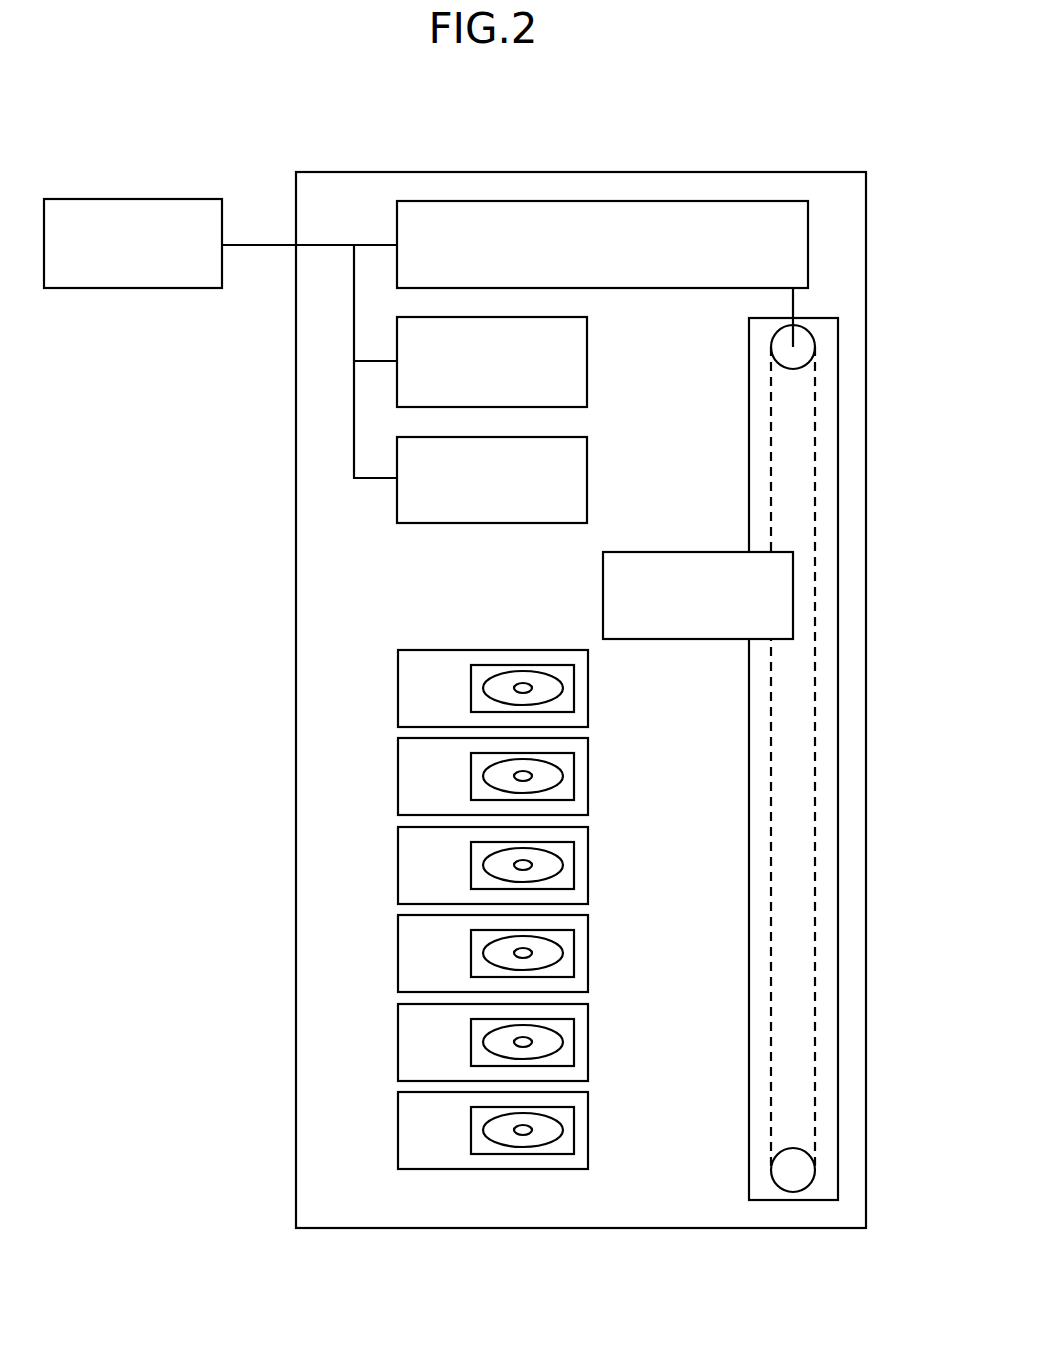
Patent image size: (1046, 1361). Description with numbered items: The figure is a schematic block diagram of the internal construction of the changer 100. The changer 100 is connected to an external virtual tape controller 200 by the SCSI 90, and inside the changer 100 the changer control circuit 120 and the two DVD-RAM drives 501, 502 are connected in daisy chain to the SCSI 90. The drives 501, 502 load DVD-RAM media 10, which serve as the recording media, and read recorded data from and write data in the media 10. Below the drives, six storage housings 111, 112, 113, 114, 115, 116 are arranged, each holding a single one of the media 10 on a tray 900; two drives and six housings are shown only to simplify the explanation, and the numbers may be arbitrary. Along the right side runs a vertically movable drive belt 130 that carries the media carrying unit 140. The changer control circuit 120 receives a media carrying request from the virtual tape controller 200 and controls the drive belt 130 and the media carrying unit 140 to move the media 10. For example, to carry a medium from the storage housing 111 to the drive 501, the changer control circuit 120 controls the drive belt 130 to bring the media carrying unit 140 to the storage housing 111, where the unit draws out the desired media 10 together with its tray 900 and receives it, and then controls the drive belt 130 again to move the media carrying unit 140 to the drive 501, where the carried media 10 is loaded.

The changer 100 is at (805, 172).
The virtual tape controller 200 is at (132, 199).
The SCSI 90 is at (256, 246).
The changer control circuit 120 is at (808, 245).
The DVD-RAM drive 501 is at (587, 361).
The DVD-RAM drive 502 is at (587, 478).
The drive belt 130 is at (838, 756).
The media carrying unit 140 is at (603, 595).
The storage housing 111 is at (398, 688).
The storage housing 112 is at (398, 776).
The storage housing 113 is at (398, 865).
The storage housing 114 is at (398, 953).
The storage housing 115 is at (398, 1042).
The storage housing 116 is at (398, 1130).
The DVD-RAM media 10 is at (471, 688).
The tray 900 is at (576, 688).